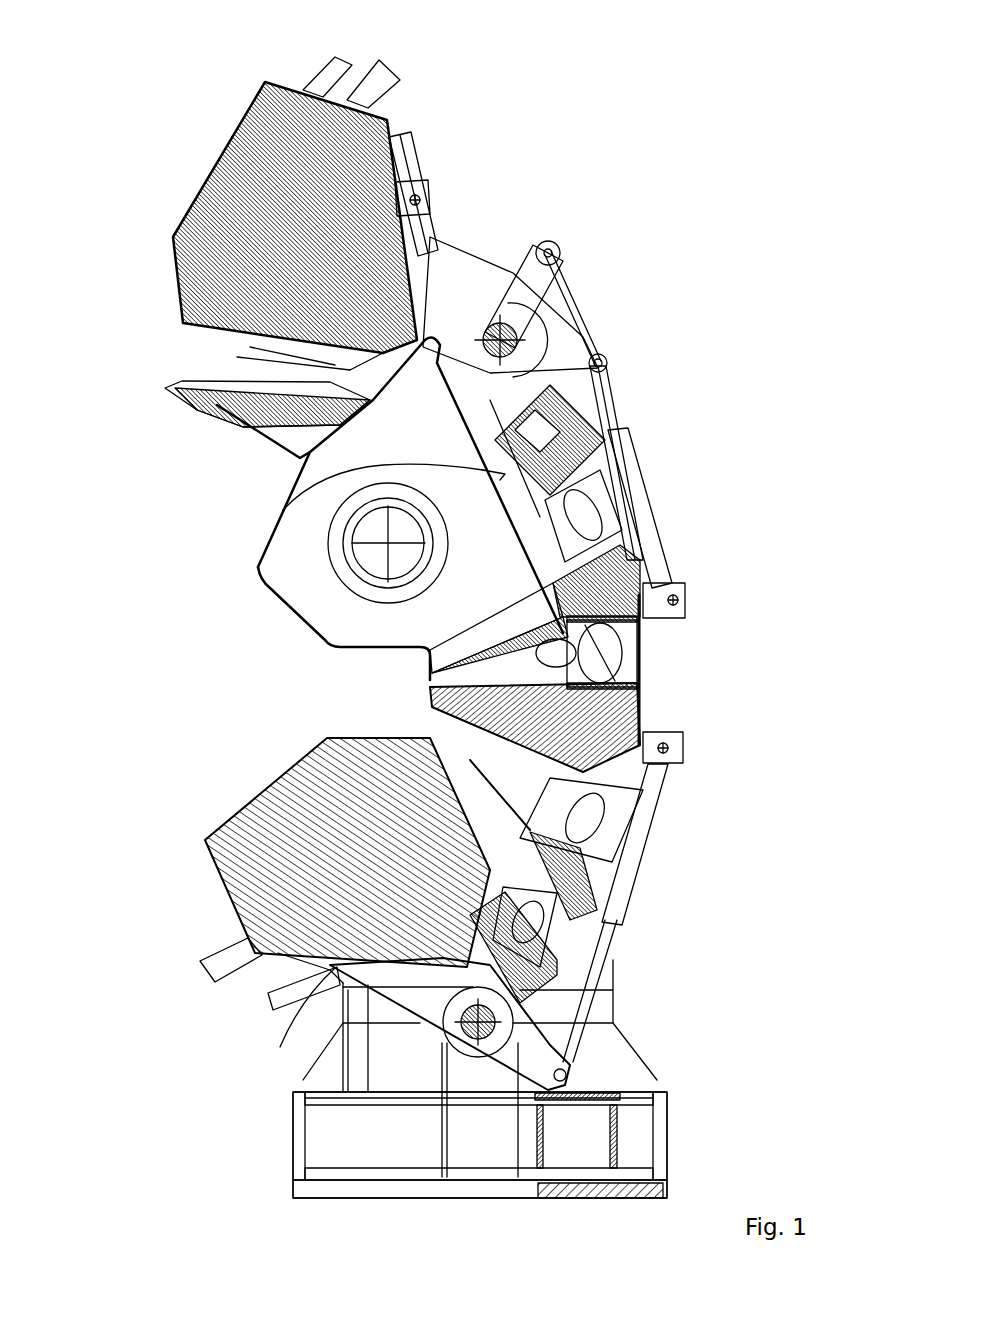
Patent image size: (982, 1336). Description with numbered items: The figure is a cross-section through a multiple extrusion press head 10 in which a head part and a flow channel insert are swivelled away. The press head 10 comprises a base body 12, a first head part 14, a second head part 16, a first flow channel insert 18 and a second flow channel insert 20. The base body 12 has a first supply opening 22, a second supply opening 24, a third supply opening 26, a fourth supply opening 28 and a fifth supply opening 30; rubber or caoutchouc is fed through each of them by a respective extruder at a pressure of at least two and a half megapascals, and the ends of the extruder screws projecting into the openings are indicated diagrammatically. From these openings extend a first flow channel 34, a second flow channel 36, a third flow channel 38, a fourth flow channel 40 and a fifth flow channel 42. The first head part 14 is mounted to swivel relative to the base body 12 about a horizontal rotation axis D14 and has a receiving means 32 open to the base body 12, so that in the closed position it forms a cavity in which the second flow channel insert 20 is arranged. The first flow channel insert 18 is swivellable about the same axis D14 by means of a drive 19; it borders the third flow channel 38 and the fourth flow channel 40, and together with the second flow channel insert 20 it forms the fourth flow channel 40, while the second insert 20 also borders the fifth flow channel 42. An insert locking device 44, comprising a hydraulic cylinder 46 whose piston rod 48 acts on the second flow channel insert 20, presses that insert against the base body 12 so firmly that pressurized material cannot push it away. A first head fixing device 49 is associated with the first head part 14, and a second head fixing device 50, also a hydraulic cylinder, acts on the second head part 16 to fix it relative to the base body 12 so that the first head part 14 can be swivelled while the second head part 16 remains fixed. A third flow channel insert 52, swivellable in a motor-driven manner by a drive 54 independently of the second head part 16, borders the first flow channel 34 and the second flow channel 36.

The multiple extrusion press head 10 is at (739, 111).
The base body 12 is at (638, 725).
The first head part 14 is at (383, 128).
The second head part 16 is at (278, 953).
The first flow channel insert 18 is at (430, 683).
The drive 19 is at (522, 270).
The second flow channel insert 20 is at (200, 410).
The first supply opening 22 is at (567, 925).
The second supply opening 24 is at (567, 788).
The third supply opening 26 is at (628, 632).
The fourth supply opening 28 is at (555, 512).
The fifth supply opening 30 is at (590, 352).
The receiving means 32 is at (260, 498).
The first flow channel 34 is at (473, 803).
The second flow channel 36 is at (590, 768).
The third flow channel 38 is at (537, 675).
The fourth flow channel 40 is at (285, 442).
The fifth flow channel 42 is at (300, 352).
The insert locking device 44 is at (593, 343).
The hydraulic cylinder 46 is at (663, 543).
The piston rod 48 is at (617, 407).
The first head fixing device 49 is at (430, 222).
The second head fixing device 50 is at (310, 1000).
The third flow channel insert 52 is at (447, 730).
The drive 54 is at (637, 880).
The rotation axis D14 is at (543, 353).